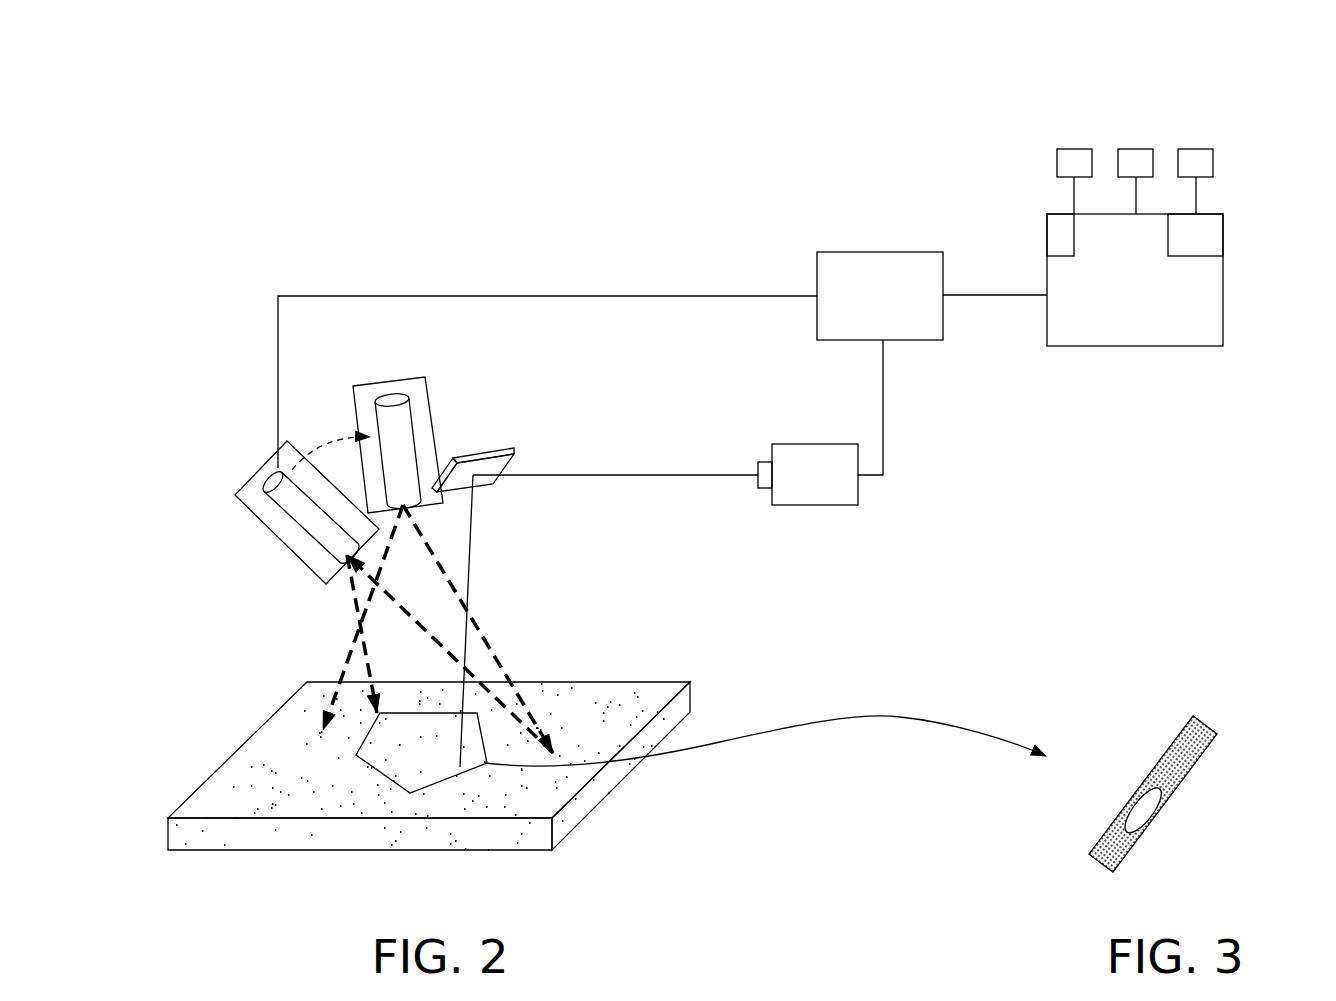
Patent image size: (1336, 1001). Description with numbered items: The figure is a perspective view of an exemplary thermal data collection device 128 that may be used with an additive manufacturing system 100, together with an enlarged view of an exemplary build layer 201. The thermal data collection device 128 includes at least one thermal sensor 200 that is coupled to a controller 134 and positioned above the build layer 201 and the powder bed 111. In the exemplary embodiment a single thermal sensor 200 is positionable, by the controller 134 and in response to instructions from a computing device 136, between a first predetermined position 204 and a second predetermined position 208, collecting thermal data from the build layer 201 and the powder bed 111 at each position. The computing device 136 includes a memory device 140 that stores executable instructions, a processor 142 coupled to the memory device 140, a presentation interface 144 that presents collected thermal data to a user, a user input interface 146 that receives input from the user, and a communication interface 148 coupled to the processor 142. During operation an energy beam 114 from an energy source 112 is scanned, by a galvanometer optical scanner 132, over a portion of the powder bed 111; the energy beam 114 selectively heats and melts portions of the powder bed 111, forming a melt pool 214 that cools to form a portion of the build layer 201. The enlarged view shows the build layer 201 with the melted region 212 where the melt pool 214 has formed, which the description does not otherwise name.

In FIG. 2, the additive manufacturing system 100 is at (1232, 103).
In FIG. 2, the powder bed 111 is at (617, 772).
In FIG. 2, the energy source 112 is at (793, 489).
In FIG. 2, the energy beam 114 is at (720, 481).
In FIG. 2, the thermal data collection device 128 is at (206, 258).
In FIG. 2, the galvanometer optical scanner 132 is at (481, 450).
In FIG. 2, the controller 134 is at (858, 311).
In FIG. 2, the computing device 136 is at (1116, 311).
In FIG. 2, the memory device 140 is at (1047, 238).
In FIG. 2, the processor 142 is at (1223, 238).
In FIG. 2, the presentation interface 144 is at (1075, 149).
In FIG. 2, the user input interface 146 is at (1136, 149).
In FIG. 2, the communication interface 148 is at (1213, 158).
In FIG. 2, the thermal sensor 200 is at (295, 545).
In FIG. 2, the build layer 201 is at (427, 790).
In FIG. 3, the build layer 201 is at (1157, 762).
In FIG. 2, the first predetermined position 204 is at (235, 493).
In FIG. 2, the second predetermined position 208 is at (388, 377).
In FIG. 3, the melt pool 212 is at (1167, 820).
In FIG. 2, the melt pool 214 is at (338, 440).